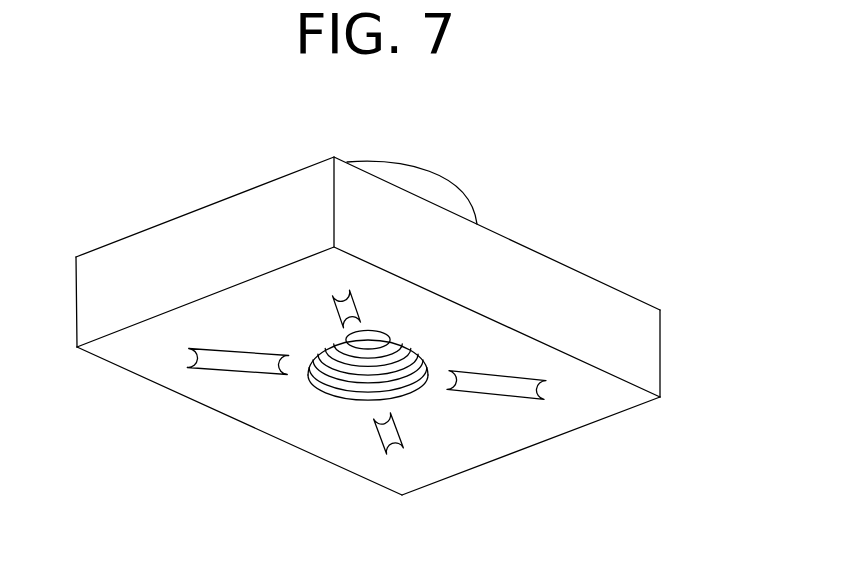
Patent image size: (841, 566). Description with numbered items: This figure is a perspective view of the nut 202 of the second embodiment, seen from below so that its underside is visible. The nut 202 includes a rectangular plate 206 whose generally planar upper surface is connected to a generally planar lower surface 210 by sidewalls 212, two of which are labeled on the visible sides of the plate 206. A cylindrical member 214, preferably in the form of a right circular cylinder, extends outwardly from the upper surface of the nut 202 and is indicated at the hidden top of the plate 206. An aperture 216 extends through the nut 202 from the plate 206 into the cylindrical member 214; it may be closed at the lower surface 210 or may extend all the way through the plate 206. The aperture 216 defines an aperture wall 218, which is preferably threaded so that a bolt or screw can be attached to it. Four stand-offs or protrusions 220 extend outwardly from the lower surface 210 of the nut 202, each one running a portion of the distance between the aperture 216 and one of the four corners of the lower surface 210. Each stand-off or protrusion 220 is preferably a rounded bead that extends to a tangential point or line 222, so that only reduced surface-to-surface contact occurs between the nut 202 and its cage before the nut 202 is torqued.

The nut 202 is at (396, 313).
The rectangular plate 206 is at (643, 345).
The lower surface 210 is at (137, 348).
The sidewalls 212 is at (140, 257).
The cylindrical member 214 is at (440, 192).
The aperture 216 is at (367, 347).
The aperture wall 218 is at (321, 423).
The stand-offs or protrusions 220 is at (339, 402).
The tangential point or line 222 is at (340, 305).